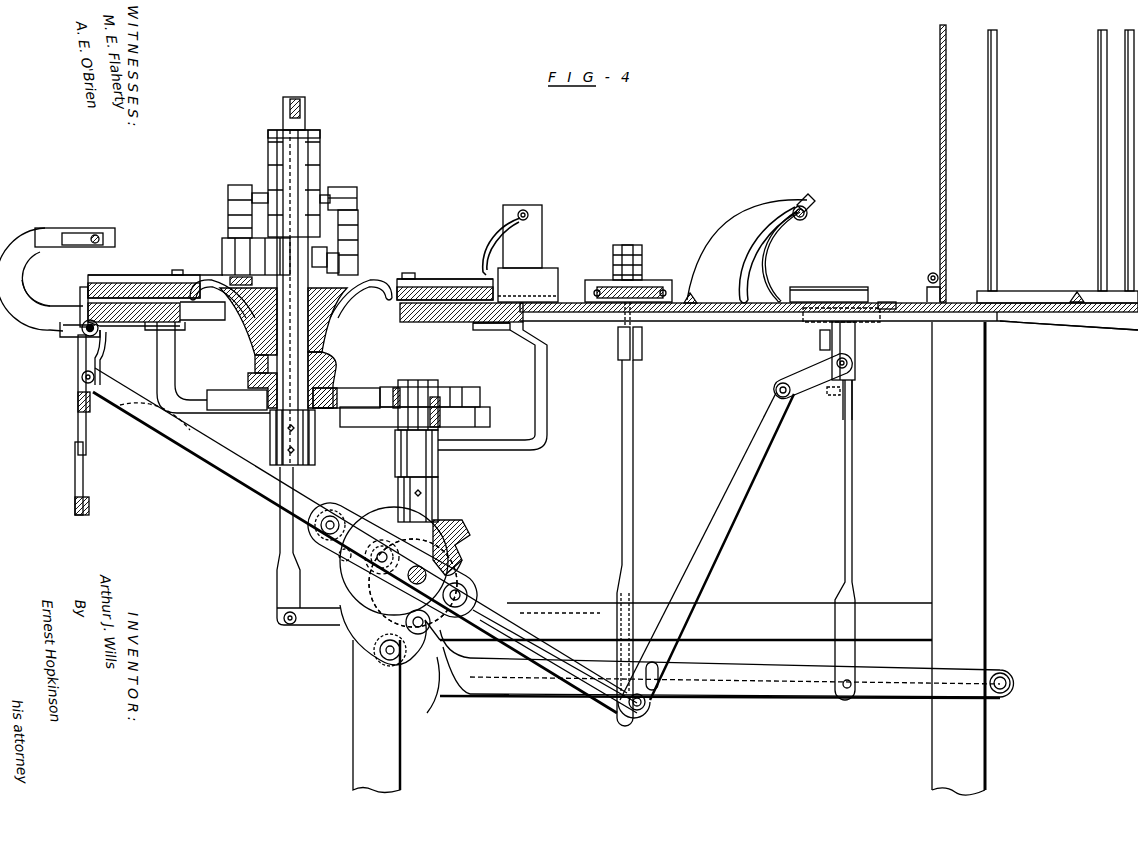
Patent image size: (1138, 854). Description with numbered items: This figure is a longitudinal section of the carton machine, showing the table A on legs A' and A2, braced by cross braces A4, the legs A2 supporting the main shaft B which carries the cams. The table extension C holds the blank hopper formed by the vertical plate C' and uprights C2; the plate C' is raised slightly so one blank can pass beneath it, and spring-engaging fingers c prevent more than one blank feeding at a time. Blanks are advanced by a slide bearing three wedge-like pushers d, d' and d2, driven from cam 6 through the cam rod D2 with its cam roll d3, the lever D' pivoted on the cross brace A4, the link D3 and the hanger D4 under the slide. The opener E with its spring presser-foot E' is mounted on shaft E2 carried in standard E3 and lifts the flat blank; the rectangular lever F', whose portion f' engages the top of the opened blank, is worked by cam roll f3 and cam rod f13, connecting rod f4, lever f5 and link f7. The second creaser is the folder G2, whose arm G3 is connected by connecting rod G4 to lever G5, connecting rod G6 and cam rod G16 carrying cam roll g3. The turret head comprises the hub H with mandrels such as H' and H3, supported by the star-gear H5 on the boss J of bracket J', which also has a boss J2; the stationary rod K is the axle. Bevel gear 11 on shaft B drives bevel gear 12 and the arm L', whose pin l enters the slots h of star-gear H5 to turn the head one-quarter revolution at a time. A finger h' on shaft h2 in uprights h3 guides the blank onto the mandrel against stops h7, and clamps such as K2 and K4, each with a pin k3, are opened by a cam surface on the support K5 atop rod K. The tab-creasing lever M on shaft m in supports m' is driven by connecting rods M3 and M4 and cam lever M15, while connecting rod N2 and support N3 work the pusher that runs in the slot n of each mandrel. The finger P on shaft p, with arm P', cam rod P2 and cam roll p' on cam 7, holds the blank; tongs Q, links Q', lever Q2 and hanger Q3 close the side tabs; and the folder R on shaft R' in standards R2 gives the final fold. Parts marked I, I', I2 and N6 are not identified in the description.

The table A is at (829, 323).
The leg A' is at (958, 558).
The leg A2 is at (376, 716).
The cross brace A4 is at (686, 621).
The main shaft B is at (430, 560).
The table extension C is at (1069, 332).
The vertical plate C' is at (925, 163).
The uprights C2 is at (1098, 128).
The spring-engaging fingers c is at (932, 275).
The pusher d is at (1077, 282).
The pusher d' is at (887, 288).
The pusher d2 is at (688, 294).
The cam roll d3 is at (330, 512).
The lever D' is at (706, 555).
The cam rod D2 is at (215, 460).
The link D3 is at (812, 370).
The hanger D4 is at (850, 333).
The opener E is at (783, 256).
The spring presser-foot E' is at (759, 255).
The shaft E2 is at (808, 213).
The standard E3 is at (745, 215).
The lever F' is at (829, 280).
The portion of lever f' is at (829, 276).
The cam roll f3 is at (428, 705).
The connecting rod f4 is at (853, 472).
The lever f5 is at (842, 415).
The link f7 is at (830, 393).
The cam rod f13 is at (752, 698).
The folder G2 is at (650, 285).
The arm G3 is at (613, 250).
The connecting rod G4 is at (632, 245).
The lever G5 is at (642, 343).
The connecting rod G6 is at (636, 478).
The cam rod G16 is at (530, 696).
The cam roll g3 is at (378, 660).
The hub H is at (283, 348).
The mandrel H' is at (445, 277).
The mandrel H3 is at (144, 276).
The star-gear H5 is at (332, 358).
The slot h is at (237, 388).
The finger h' is at (500, 238).
The shaft h2 is at (528, 212).
The uprights h3 is at (540, 235).
The stops h7 is at (178, 270).
The shaft I is at (423, 388).
The bracket I' is at (452, 350).
The bracket I2 is at (478, 350).
The boss J is at (280, 437).
The bracket J' is at (353, 386).
The boss J2 is at (440, 478).
The rod K is at (309, 300).
The clamp K2 is at (340, 272).
The pin k3 is at (322, 232).
The clamp K4 is at (253, 287).
The support K5 is at (358, 210).
The arm L' is at (416, 407).
The pin l is at (335, 397).
The lever M is at (268, 142).
The shaft m is at (300, 174).
The supports m' is at (297, 200).
The connecting rod M3 is at (282, 500).
The connecting rod M4 is at (280, 535).
The cam lever M15 is at (300, 630).
The connecting rod N2 is at (306, 103).
The support N3 is at (298, 165).
The hook N6 is at (291, 300).
The slot n is at (200, 283).
The finger P is at (67, 338).
The shaft p is at (74, 344).
The arm P' is at (107, 357).
The cam rod P2 is at (148, 420).
The cam roll p' is at (331, 569).
The tongs Q is at (72, 363).
The links Q' is at (91, 478).
The lever Q2 is at (86, 515).
The hanger Q3 is at (100, 352).
The folder R is at (41, 267).
The shaft R' is at (75, 223).
The standards R2 is at (40, 290).
The cam 6 is at (355, 578).
The cam 7 is at (365, 635).
The bevel gear 11 is at (460, 565).
The bevel gear 12 is at (462, 530).